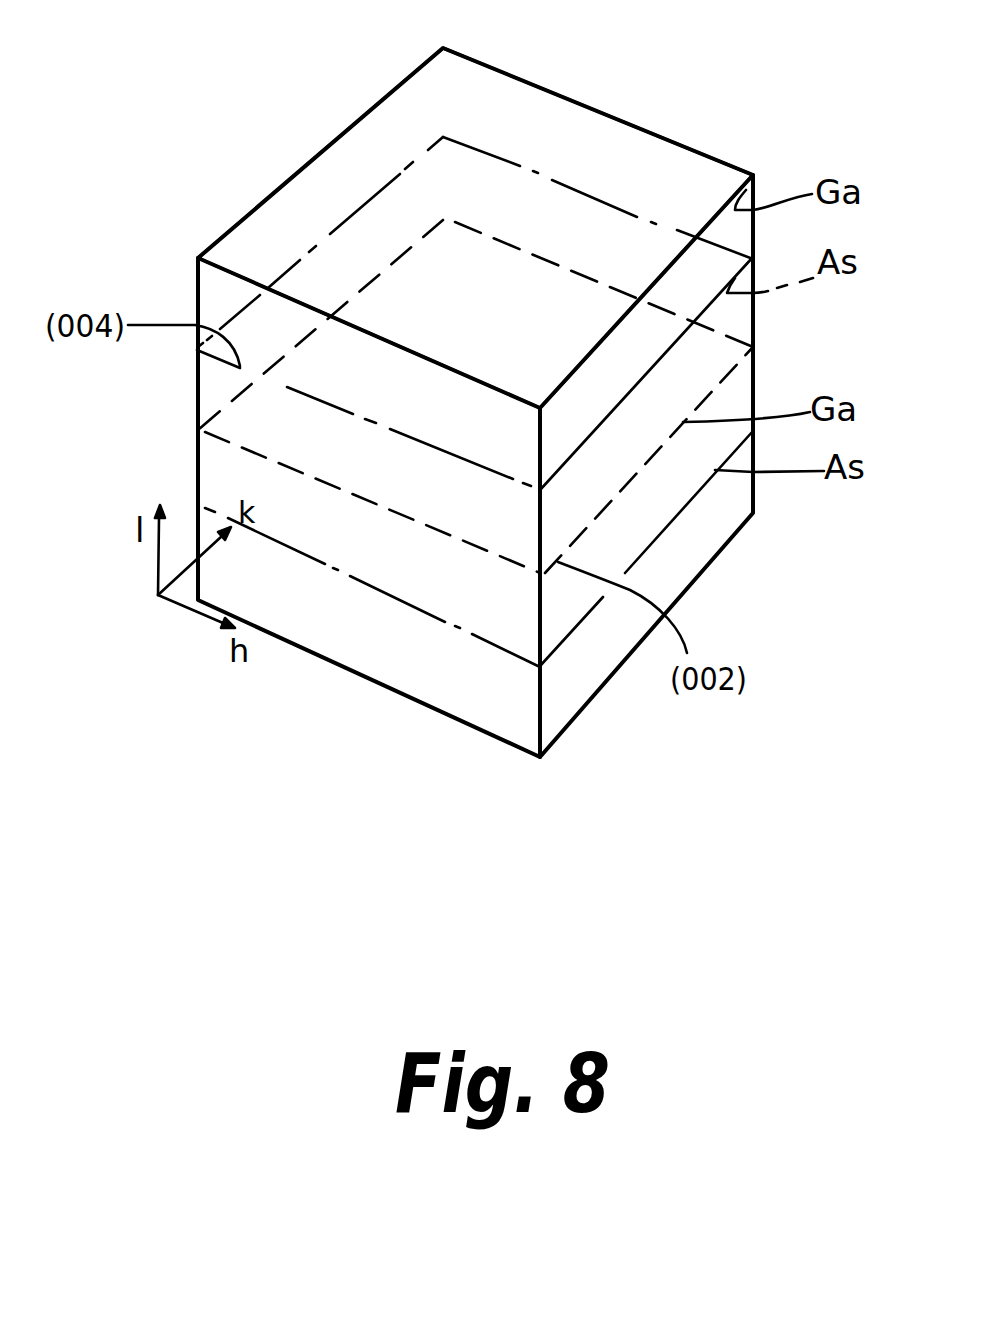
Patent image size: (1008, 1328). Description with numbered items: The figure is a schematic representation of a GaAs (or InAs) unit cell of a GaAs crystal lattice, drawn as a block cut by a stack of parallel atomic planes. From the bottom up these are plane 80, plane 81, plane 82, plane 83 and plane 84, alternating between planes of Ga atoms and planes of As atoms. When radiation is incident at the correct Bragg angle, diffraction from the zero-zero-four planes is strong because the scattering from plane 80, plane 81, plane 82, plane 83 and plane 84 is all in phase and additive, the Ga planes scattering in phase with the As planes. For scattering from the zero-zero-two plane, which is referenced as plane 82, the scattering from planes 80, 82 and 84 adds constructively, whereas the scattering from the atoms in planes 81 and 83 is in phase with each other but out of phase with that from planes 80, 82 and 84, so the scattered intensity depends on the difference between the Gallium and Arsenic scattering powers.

The plane 80 is at (718, 556).
The plane 81 is at (677, 515).
The 002 plane 82 is at (705, 395).
The plane 83 is at (615, 202).
The plane 84 is at (625, 118).